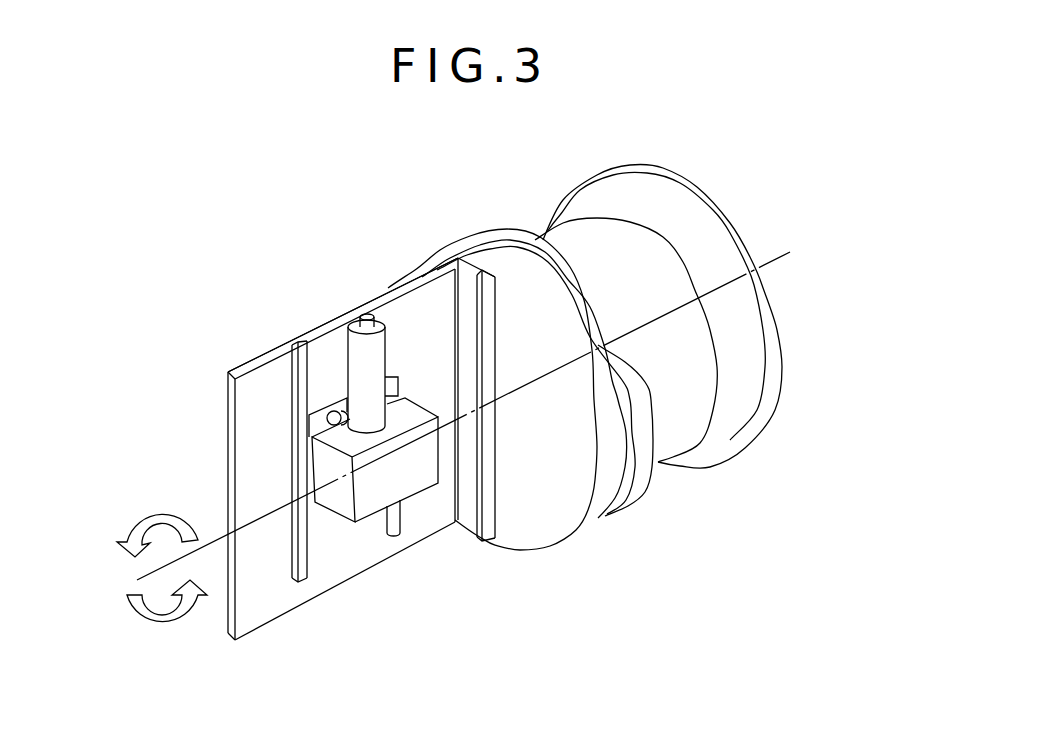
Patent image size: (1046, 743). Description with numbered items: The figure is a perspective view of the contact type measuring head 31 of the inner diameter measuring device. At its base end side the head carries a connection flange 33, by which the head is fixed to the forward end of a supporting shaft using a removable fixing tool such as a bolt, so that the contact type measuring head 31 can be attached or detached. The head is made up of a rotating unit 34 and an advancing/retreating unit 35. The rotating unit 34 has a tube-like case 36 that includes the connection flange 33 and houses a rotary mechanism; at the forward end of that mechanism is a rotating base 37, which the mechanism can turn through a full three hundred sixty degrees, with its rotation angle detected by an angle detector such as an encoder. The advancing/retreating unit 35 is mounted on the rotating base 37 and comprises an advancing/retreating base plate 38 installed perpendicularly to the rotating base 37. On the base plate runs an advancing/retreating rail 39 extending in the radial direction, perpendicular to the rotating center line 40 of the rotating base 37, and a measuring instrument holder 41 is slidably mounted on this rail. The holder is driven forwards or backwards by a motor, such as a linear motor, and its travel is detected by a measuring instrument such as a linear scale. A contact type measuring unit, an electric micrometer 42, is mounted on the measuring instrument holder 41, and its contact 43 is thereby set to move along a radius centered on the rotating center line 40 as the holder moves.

The contact type measuring head 31 is at (334, 151).
The connection flange 33 is at (693, 190).
The rotating unit 34 is at (665, 172).
The advancing/retreating unit 35 is at (288, 340).
The case 36 is at (543, 238).
The rotating base 37 is at (475, 252).
The advancing/retreating base plate 38 is at (352, 332).
The advancing/retreating rail 39 is at (300, 432).
The rotating center line 40 is at (250, 527).
The measuring instrument holder 41 is at (340, 517).
The electric micrometer 42 is at (343, 367).
The contact 43 is at (374, 310).